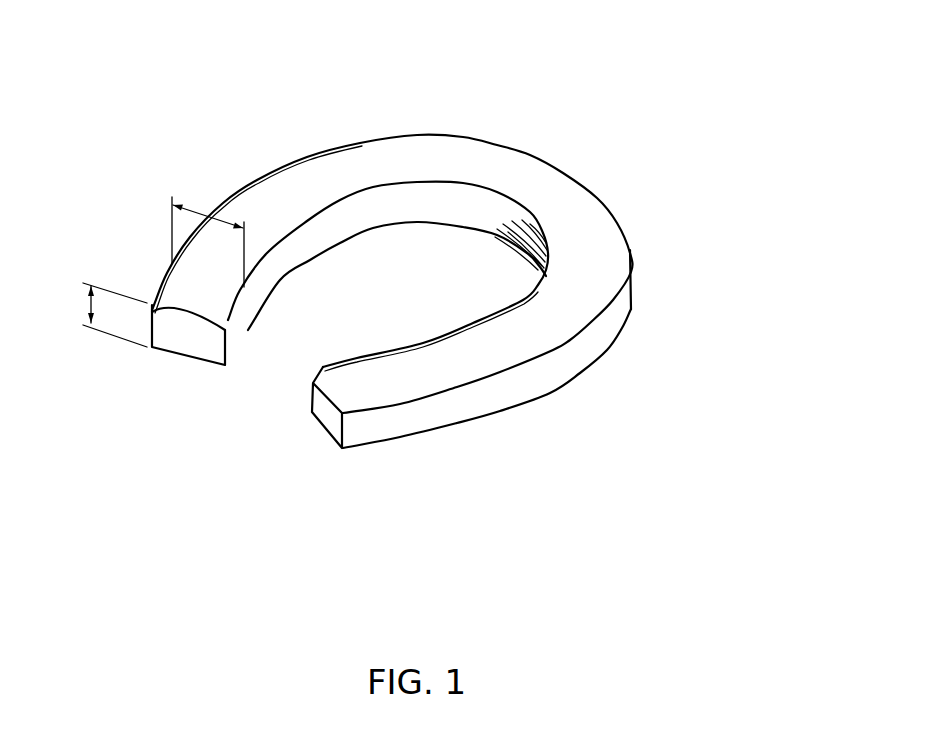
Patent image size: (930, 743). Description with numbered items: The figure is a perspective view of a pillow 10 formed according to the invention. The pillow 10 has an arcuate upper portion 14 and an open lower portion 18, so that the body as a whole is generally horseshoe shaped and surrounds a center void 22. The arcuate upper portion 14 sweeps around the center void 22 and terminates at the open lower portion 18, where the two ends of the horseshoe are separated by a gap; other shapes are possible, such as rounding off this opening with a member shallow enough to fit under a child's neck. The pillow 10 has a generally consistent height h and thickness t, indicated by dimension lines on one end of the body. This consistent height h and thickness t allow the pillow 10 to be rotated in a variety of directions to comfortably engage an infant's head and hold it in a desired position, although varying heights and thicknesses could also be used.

The pillow 10 is at (694, 130).
The arcuate upper portion 14 is at (443, 155).
The center void 22 is at (355, 255).
The open lower portion 18 is at (188, 335).
The thickness t is at (208, 236).
The height h is at (101, 315).